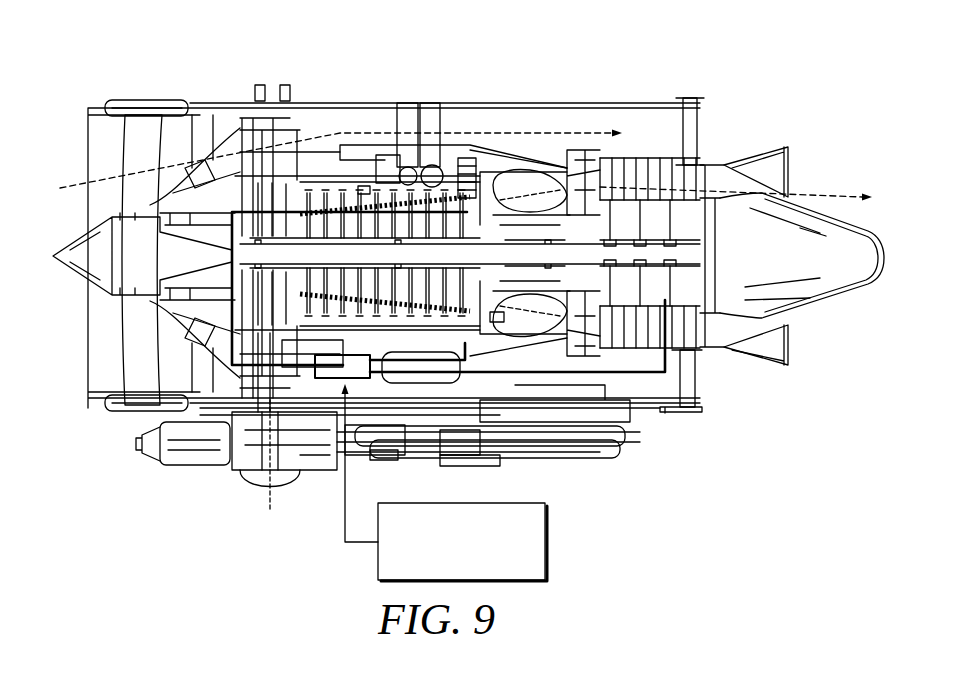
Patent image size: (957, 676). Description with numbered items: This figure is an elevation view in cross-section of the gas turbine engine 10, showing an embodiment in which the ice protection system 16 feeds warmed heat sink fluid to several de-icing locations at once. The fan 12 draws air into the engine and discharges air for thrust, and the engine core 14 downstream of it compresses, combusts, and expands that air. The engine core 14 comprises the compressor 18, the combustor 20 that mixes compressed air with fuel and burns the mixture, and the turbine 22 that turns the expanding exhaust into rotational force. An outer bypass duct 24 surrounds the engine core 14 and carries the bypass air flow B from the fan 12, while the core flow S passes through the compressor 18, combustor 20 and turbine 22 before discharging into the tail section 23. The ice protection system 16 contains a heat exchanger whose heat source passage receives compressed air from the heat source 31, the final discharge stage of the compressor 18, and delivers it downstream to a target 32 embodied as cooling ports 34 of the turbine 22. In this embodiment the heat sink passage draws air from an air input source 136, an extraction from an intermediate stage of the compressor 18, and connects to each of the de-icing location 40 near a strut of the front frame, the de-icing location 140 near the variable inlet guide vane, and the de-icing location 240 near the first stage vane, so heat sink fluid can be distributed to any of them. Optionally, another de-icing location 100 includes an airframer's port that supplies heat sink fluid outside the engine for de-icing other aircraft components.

The gas turbine engine 10 is at (822, 68).
The fan 12 is at (133, 126).
The engine core 14 is at (307, 160).
The ice protection system 16 is at (497, 503).
The compressor 18 is at (425, 182).
The combustor 20 is at (528, 166).
The turbine 22 is at (606, 166).
The tail section 23 is at (788, 135).
The outer bypass duct 24 is at (186, 122).
The heat source 31 is at (498, 322).
The target 32 is at (686, 304).
The cooling ports 34 is at (615, 335).
The de-icing location 40 is at (230, 298).
The de-icing location 100 is at (260, 508).
The air input source 136 is at (364, 188).
The de-icing location 140 is at (285, 300).
The de-icing location 240 is at (350, 292).
The bypass air flow B is at (226, 125).
The core flow S is at (821, 183).